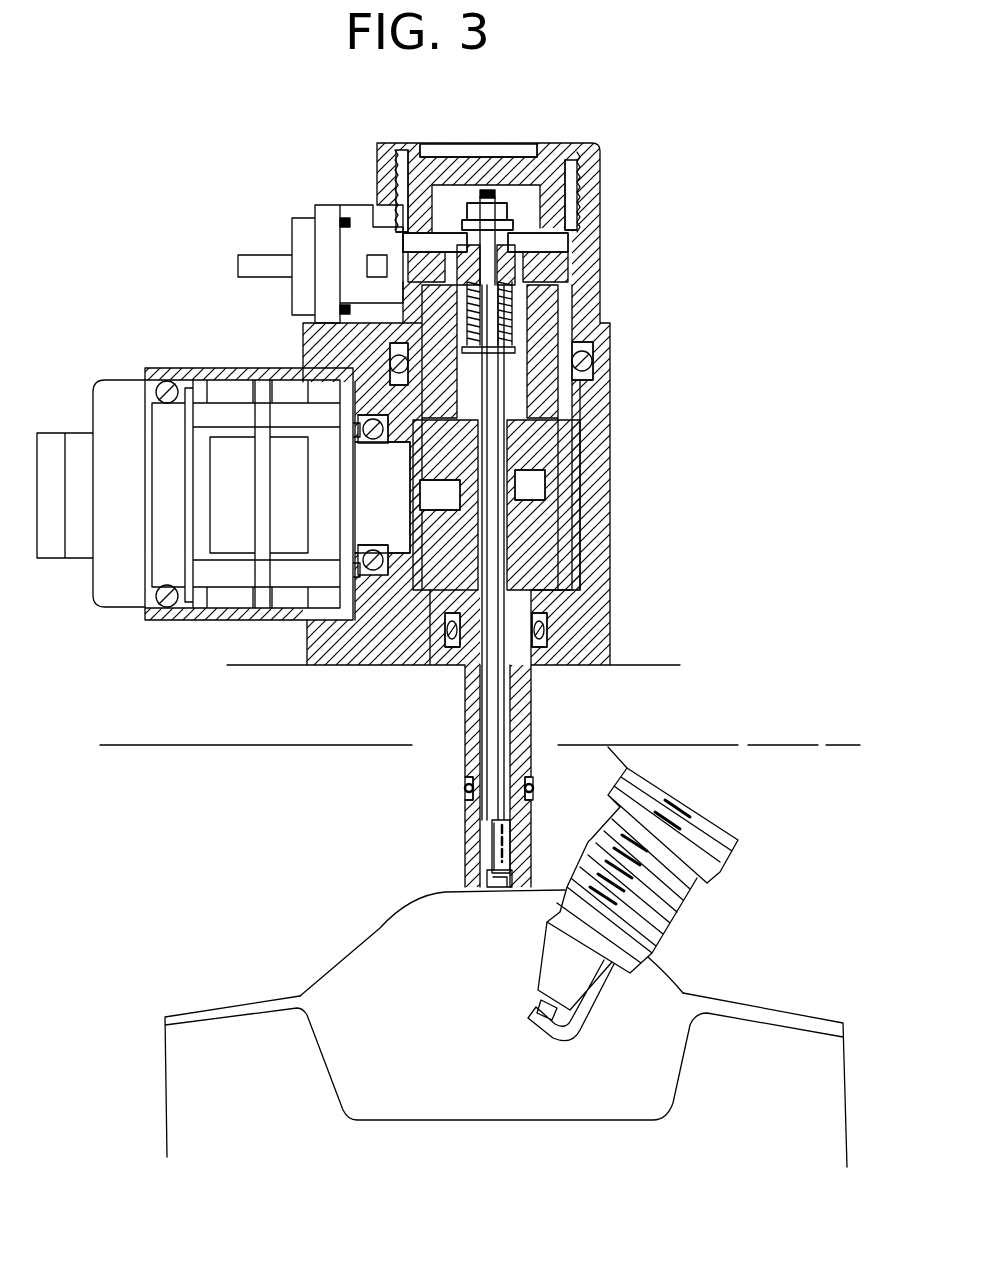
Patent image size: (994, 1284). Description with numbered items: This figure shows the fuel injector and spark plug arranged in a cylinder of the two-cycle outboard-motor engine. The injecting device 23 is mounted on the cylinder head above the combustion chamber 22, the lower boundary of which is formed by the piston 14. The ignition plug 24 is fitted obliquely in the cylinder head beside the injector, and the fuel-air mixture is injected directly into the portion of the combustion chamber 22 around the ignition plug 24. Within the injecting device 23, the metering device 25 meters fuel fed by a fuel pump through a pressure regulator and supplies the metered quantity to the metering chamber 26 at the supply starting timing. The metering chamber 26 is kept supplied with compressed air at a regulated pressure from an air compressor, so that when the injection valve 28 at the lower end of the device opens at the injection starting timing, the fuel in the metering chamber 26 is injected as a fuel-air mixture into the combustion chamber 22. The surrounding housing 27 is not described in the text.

The piston 14 is at (178, 1068).
The combustion chamber 22 is at (362, 965).
The injecting device 23 is at (317, 200).
The ignition plug 24 is at (827, 747).
The metering device 25 is at (117, 592).
The metering chamber 26 is at (513, 533).
The housing 27 is at (599, 197).
The injection valve 28 is at (488, 851).